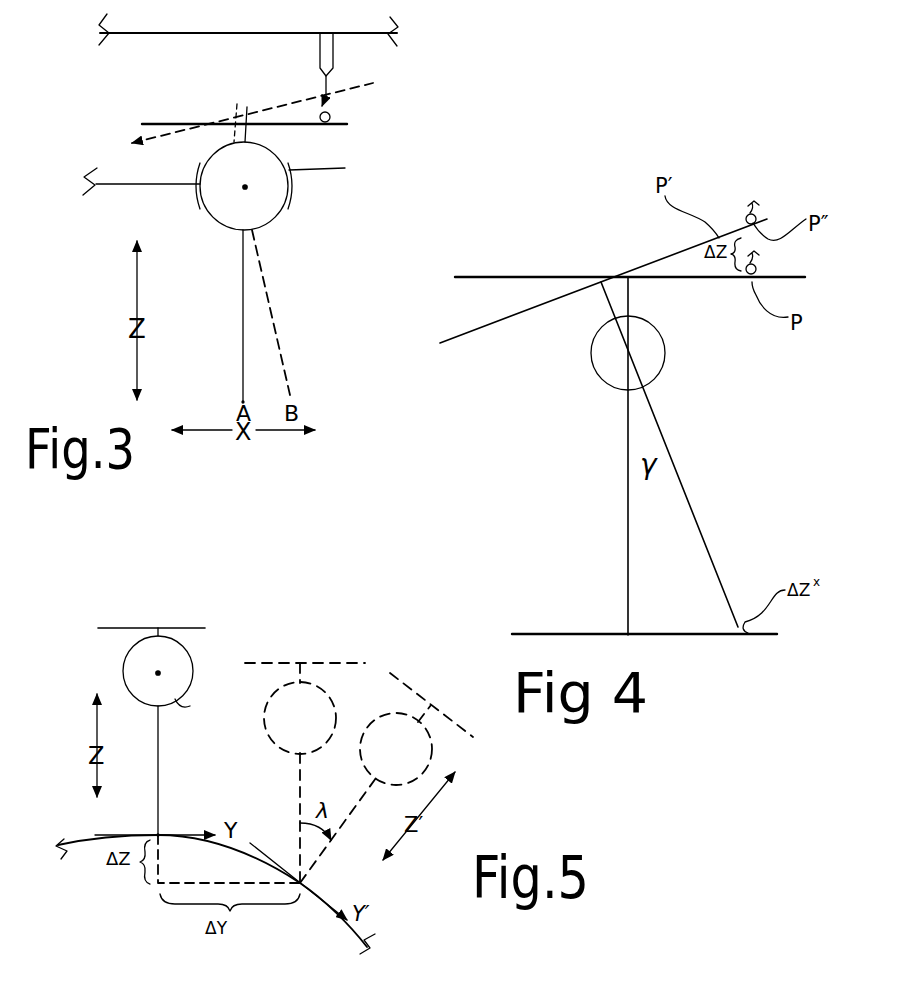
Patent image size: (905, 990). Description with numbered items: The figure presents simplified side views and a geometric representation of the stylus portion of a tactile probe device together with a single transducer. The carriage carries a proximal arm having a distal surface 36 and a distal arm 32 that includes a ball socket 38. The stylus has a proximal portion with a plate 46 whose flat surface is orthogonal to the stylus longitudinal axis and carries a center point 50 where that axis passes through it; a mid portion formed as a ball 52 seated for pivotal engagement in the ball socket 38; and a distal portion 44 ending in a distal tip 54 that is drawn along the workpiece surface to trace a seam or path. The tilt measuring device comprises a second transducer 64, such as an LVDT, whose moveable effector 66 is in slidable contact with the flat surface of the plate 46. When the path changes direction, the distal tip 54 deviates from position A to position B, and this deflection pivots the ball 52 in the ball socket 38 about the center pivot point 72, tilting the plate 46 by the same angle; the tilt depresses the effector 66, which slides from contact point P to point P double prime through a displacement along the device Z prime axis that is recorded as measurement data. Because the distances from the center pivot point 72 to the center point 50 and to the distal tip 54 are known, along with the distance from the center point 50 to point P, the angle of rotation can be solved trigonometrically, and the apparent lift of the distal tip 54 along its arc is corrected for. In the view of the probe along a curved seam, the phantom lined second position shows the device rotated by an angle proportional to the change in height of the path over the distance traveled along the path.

In FIG. 3, the distal arm 32 is at (100, 184).
In FIG. 3, the distal surface 36 is at (162, 33).
In FIG. 3, the ball socket 38 is at (332, 169).
In FIG. 3, the distal portion 44 is at (247, 296).
In FIG. 4, the distal portion 44 is at (635, 531).
In FIG. 5, the distal portion 44 is at (160, 773).
In FIG. 3, the plate 46 is at (141, 124).
In FIG. 4, the plate 46 is at (470, 323).
In FIG. 5, the plate 46 is at (99, 626).
In FIG. 3, the center point 50 is at (237, 104).
In FIG. 4, the center point 50 is at (607, 283).
In FIG. 5, the ball 52 is at (190, 706).
In FIG. 3, the distal tip 54 is at (242, 402).
In FIG. 4, the distal tip 54 is at (738, 617).
In FIG. 5, the distal tip 54 is at (158, 835).
In FIG. 3, the second transducer 64 is at (320, 50).
In FIG. 3, the moveable effector 66 is at (333, 116).
In FIG. 4, the moveable effector 66 is at (745, 217).
In FIG. 3, the center pivot point 72 is at (245, 188).
In FIG. 4, the center pivot point 72 is at (620, 356).
In FIG. 5, the center pivot point 72 is at (157, 673).